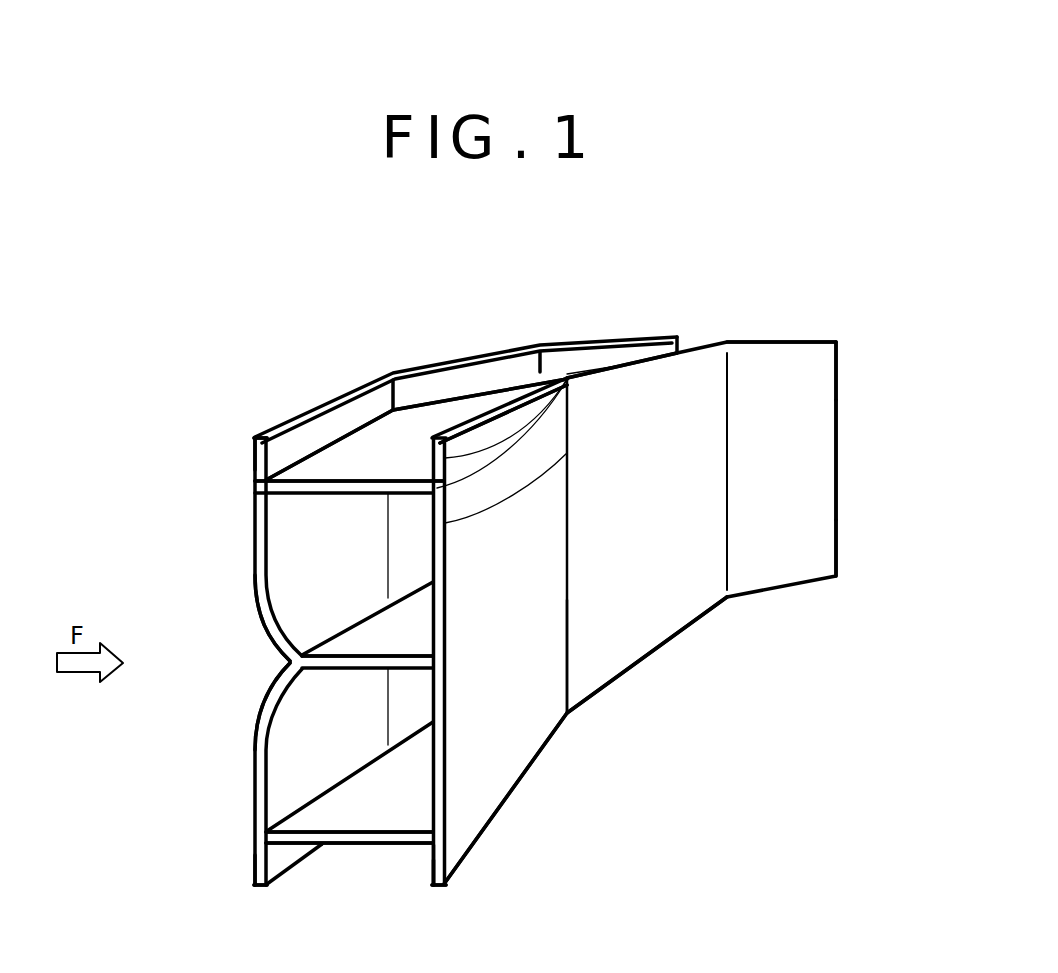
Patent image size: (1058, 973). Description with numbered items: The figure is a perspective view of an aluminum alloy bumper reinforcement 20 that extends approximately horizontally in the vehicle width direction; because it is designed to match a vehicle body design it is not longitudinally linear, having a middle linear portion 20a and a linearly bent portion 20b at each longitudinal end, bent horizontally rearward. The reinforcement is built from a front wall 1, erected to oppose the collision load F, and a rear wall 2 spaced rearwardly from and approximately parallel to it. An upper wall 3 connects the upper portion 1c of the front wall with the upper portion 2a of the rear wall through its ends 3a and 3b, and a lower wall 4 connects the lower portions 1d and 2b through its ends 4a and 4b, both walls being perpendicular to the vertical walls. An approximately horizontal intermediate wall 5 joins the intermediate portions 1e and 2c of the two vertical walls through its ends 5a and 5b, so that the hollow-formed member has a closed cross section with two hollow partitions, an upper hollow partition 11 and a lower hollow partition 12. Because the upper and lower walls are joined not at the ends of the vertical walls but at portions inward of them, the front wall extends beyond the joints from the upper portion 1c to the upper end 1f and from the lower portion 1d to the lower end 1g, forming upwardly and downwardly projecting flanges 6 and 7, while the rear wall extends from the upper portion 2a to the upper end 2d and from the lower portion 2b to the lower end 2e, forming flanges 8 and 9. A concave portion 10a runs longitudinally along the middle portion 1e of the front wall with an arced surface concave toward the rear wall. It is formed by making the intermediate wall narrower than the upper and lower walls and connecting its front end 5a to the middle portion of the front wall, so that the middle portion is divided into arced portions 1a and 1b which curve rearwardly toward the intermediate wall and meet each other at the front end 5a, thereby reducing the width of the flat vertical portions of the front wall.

The front wall 1 is at (253, 552).
The middle portion of upper middle portion of front wall 1a is at (260, 607).
The middle portion of lower middle portion of front wall 1b is at (255, 727).
The upper portion of front wall 1c is at (258, 490).
The lower portion of front wall 1d is at (255, 832).
The intermediate portion of front wall 1e is at (280, 667).
The upper end of front wall 1f is at (258, 436).
The lower end of front wall 1g is at (254, 887).
The rear wall 2 is at (445, 558).
The upper portion of rear wall 2a is at (540, 465).
The lower portion of rear wall 2b is at (445, 835).
The intermediate portion of rear wall 2c is at (447, 658).
The upper end of rear wall 2d is at (510, 403).
The lower end of rear wall 2e is at (438, 888).
The upper wall 3 is at (363, 480).
The end of upper wall 3a is at (288, 474).
The end of upper wall 3b is at (432, 480).
The lower wall 4 is at (350, 847).
The end of lower wall 4a is at (270, 847).
The end of lower wall 4b is at (430, 847).
The intermediate wall 5 is at (392, 655).
The front end of intermediate wall 5a is at (302, 670).
The end of intermediate wall 5b is at (447, 665).
The upwardly projecting flange 6 is at (253, 453).
The downwardly projecting flange 7 is at (255, 867).
The upwardly projecting flange 8 is at (530, 398).
The downwardly projecting flange 9 is at (448, 862).
The concave portion 10a is at (263, 666).
The upper hollow partition 11 is at (515, 530).
The lower hollow partition 12 is at (393, 768).
The bumper reinforcement 20 is at (697, 404).
The middle linear portion 20a is at (667, 513).
The linearly bent portion 20b is at (773, 433).